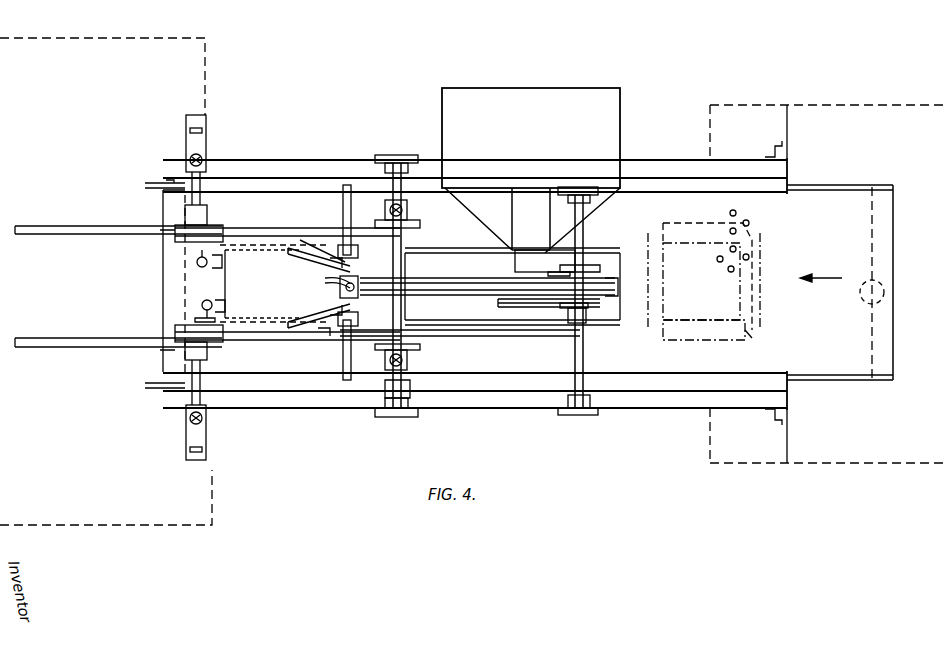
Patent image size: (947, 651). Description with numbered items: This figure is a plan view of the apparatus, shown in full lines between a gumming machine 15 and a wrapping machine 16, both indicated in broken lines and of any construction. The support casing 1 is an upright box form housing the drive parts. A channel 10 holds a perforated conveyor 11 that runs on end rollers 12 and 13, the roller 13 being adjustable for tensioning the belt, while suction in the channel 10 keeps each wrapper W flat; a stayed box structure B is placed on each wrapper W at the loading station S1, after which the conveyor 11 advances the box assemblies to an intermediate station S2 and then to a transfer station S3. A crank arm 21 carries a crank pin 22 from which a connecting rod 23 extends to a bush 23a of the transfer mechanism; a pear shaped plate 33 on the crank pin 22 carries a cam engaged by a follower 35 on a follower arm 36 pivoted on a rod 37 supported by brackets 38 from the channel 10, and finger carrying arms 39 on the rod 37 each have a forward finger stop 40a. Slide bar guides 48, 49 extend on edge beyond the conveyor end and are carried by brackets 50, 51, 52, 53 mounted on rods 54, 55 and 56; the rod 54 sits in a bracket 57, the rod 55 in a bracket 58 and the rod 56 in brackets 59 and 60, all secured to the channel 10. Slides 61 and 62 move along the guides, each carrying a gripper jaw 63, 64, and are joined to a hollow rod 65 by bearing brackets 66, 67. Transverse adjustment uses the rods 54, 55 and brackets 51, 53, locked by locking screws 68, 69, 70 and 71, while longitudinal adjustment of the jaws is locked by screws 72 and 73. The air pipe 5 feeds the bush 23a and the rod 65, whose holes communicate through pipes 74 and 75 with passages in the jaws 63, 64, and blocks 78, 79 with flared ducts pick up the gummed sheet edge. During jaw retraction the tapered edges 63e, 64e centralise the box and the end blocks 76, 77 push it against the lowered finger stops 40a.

The support casing 1 is at (562, 96).
The air pipe 5 is at (330, 282).
The channel 10 is at (262, 167).
The conveyor 11 is at (195, 280).
The end roller 12 is at (882, 291).
The end roller 13 is at (185, 304).
The gumming machine 15 is at (935, 105).
The wrapping machine 16 is at (78, 40).
The crank arm 21 is at (580, 264).
The crank pin 22 is at (605, 272).
The connecting rod 23 is at (418, 288).
The bush 23a is at (363, 278).
The pear shaped plate 33 is at (497, 302).
The follower 35 is at (589, 308).
The follower arm 36 is at (586, 322).
The rod 37 is at (575, 343).
The brackets 38 is at (570, 415).
The finger carrying arms 39 is at (512, 326).
The finger stop 40a is at (347, 316).
The slide bar guide 48 is at (47, 228).
The slide bar guide 49 is at (70, 338).
The bracket 50 is at (218, 228).
The bracket 51 is at (406, 226).
The bracket 52 is at (215, 353).
The bracket 53 is at (408, 358).
The rod 54 is at (204, 184).
The rod 55 is at (198, 390).
The rod 56 is at (390, 385).
The bracket 57 is at (188, 163).
The bracket 58 is at (205, 440).
The bracket 59 is at (396, 155).
The bracket 60 is at (398, 418).
The slide 61 is at (250, 230).
The slide 62 is at (262, 337).
The gripper jaw 63 is at (303, 260).
The leading edge 63e is at (325, 248).
The gripper jaw 64 is at (298, 318).
The leading edge 64e is at (303, 338).
The rod 65 is at (352, 357).
The bearing bracket 66 is at (347, 183).
The bearing bracket 67 is at (405, 334).
The locking screw 68 is at (191, 156).
The locking screw 69 is at (401, 206).
The locking screw 70 is at (196, 425).
The locking screw 71 is at (401, 366).
The locking screw 72 is at (268, 243).
The locking screw 73 is at (275, 307).
The pipe 74 is at (320, 245).
The pipe 75 is at (322, 337).
The end block 76 is at (218, 268).
The end block 77 is at (207, 301).
The block 78 is at (197, 262).
The block 79 is at (205, 319).
The loading station S1 is at (712, 293).
The intermediate station S2 is at (484, 275).
The transfer station S3 is at (272, 296).
The wrapper W is at (753, 252).
The stayed box structure B is at (718, 300).